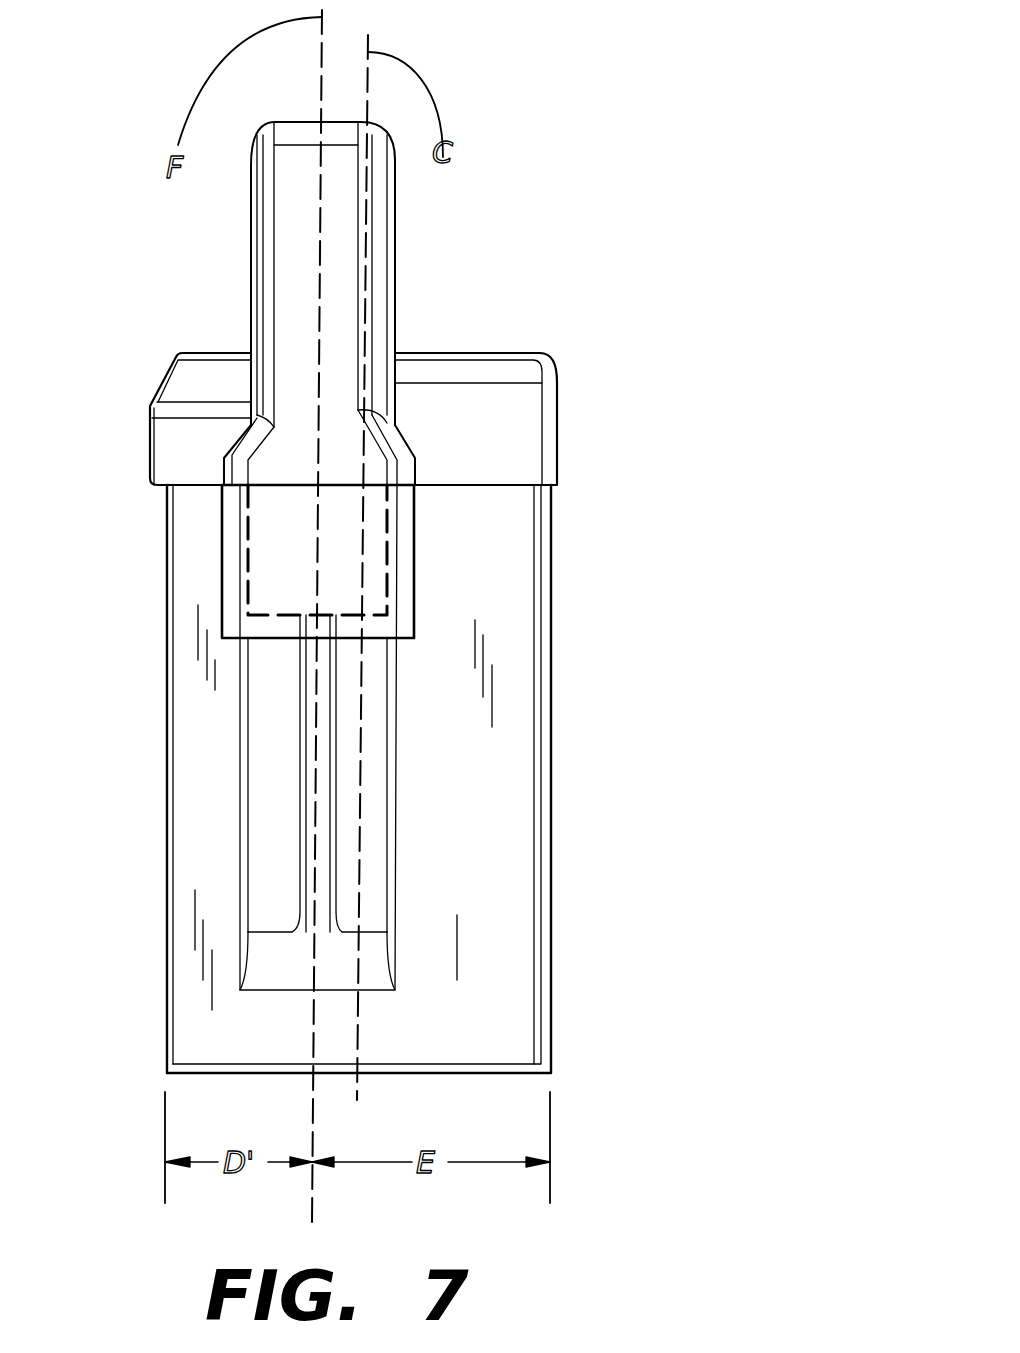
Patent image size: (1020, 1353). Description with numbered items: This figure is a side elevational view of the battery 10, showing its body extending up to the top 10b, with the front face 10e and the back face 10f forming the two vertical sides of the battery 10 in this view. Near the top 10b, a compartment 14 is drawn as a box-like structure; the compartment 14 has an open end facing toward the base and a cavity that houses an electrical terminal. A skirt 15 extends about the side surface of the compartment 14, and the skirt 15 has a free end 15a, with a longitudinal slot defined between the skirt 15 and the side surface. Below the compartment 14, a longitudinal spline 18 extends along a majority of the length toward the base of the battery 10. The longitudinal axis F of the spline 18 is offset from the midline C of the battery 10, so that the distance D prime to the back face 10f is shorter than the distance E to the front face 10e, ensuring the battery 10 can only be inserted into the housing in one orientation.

The battery 10 is at (688, 138).
The top 10b is at (210, 351).
The front face 10e is at (553, 942).
The back face 10f is at (168, 748).
The compartment 14 is at (290, 558).
The skirt 15 is at (415, 591).
The free end 15a is at (360, 639).
The longitudinal spline 18 is at (315, 885).